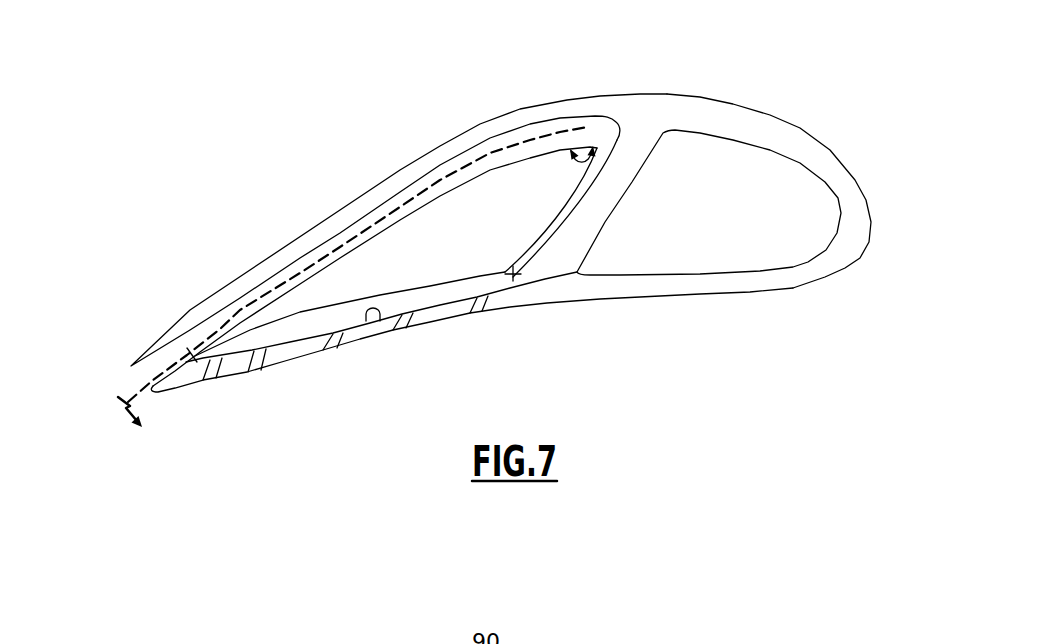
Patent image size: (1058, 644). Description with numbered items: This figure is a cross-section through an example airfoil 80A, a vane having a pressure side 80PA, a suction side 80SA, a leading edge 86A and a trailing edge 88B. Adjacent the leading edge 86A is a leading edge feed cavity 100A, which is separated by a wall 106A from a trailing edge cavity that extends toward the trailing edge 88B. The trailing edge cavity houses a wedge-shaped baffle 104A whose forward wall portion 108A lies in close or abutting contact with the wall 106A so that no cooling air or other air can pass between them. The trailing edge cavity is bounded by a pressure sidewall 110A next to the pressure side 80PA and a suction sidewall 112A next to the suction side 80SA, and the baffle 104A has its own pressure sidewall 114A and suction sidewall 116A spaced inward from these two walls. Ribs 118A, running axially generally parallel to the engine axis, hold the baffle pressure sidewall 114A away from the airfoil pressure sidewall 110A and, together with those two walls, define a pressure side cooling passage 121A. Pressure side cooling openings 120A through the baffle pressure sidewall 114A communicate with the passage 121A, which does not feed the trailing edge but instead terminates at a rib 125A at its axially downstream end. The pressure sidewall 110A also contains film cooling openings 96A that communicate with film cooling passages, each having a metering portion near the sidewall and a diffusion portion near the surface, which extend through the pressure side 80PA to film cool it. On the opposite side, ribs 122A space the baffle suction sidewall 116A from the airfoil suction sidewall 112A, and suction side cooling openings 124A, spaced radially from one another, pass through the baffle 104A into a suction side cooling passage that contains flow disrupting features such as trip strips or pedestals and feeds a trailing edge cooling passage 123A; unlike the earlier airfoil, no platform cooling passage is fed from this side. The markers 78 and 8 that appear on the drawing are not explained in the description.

The airfoil 80A is at (496, 234).
The suction side 80SA is at (578, 98).
The pressure side 80PA is at (502, 311).
The leading edge 86A is at (867, 246).
The trailing edge 88B is at (133, 365).
The film cooling openings 96A is at (248, 380).
The leading edge feed cavity 100A is at (796, 168).
The baffle 104A is at (281, 326).
The wall 106A is at (604, 200).
The forward wall portion 108A is at (564, 219).
The pressure sidewall 110A is at (380, 321).
The suction sidewall 112A is at (426, 190).
The pressure sidewall 114A is at (450, 283).
The suction sidewall 116A is at (390, 228).
The ribs 118A is at (522, 277).
The pressure side cooling openings 120A is at (494, 261).
The pressure side cooling passage 121A is at (338, 293).
The ribs 122A is at (133, 377).
The trailing edge cooling passage 123A is at (142, 379).
The suction side cooling openings 124A is at (605, 166).
The rib 125A is at (186, 355).
The rotation direction 78 is at (595, 141).
The section line 8- 8 is at (127, 419).